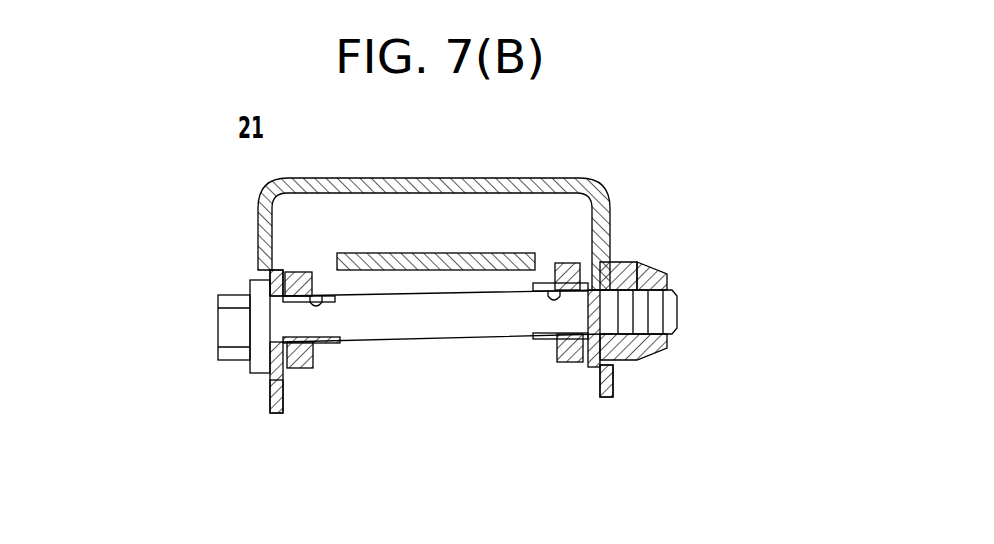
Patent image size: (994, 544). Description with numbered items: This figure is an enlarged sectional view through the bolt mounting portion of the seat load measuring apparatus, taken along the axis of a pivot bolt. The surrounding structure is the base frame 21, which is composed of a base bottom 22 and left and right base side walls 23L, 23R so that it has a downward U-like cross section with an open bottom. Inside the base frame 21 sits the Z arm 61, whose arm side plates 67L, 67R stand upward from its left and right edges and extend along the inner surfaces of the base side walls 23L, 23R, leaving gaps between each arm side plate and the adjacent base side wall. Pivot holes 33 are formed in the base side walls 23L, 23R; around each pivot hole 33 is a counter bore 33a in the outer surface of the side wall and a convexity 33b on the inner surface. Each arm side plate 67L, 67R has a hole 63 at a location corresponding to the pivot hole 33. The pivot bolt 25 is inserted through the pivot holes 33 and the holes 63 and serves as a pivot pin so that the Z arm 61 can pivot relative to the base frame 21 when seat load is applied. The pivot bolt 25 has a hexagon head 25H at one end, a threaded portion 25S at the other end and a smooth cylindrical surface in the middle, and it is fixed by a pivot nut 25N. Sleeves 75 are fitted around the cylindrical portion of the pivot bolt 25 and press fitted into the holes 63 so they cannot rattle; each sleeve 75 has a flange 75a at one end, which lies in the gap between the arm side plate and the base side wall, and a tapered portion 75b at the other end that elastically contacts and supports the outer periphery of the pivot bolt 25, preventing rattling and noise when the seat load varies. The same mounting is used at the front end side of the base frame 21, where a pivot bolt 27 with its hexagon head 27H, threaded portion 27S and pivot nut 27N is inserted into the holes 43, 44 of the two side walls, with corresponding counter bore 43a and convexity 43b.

The base frame 21 is at (417, 201).
The base bottom 22 is at (520, 178).
The left base side wall 23L is at (258, 226).
The right base side wall 23R is at (637, 219).
The Z arm 61 is at (446, 228).
The hole 63 is at (316, 296).
The pivot bolt 25 is at (440, 359).
The pivot bolt 27 is at (440, 359).
The hexagon head 25H is at (228, 330).
The hexagon head 27H is at (167, 341).
The threaded portion 25S is at (678, 310).
The threaded portion 27S is at (709, 313).
The pivot nut 25N is at (660, 352).
The pivot nut 27N is at (695, 331).
The pivot hole 33 is at (262, 355).
The hole 43 is at (411, 363).
The hole 44 is at (620, 365).
The counter bore 33a is at (258, 283).
The counter bore 43a is at (410, 248).
The convexity 33b is at (282, 398).
The convexity 43b is at (425, 436).
The sleeve 75 is at (430, 404).
The flange 75a is at (298, 358).
The tapered portion 75b is at (335, 350).
The left arm side plate 67L is at (296, 366).
The right arm side plate 67R is at (567, 364).